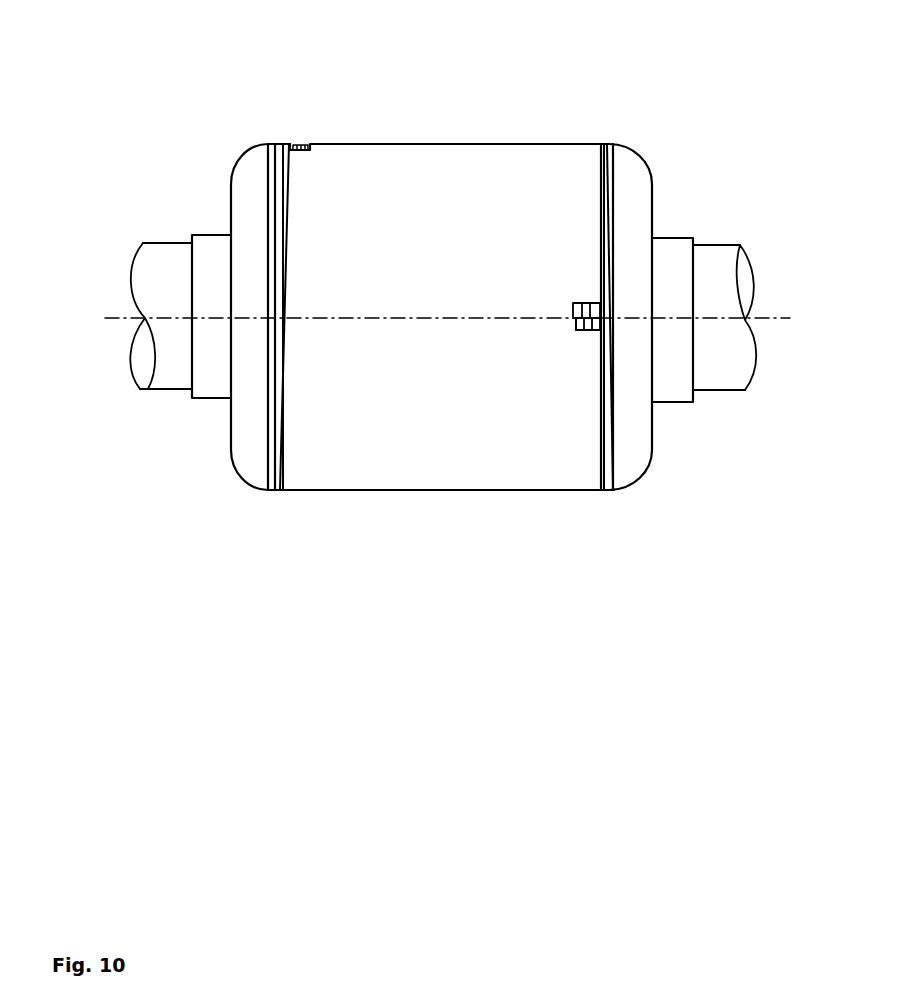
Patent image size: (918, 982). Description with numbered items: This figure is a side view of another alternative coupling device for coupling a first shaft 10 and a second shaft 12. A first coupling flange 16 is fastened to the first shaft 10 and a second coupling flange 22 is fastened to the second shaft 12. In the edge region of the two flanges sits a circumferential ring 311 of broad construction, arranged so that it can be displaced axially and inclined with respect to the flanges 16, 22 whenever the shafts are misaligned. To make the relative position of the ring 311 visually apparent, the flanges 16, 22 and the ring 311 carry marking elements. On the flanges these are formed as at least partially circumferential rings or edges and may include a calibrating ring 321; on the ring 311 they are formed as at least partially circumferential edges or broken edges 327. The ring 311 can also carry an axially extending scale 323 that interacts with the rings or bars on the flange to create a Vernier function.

The first shaft 10 is at (163, 268).
The second shaft 12 is at (712, 252).
The first coupling flange 16 is at (213, 270).
The second coupling flange 22 is at (637, 468).
The circumferential ring 311 is at (422, 146).
The calibrating ring 321 is at (272, 165).
The scale 323 is at (590, 331).
The broken edge 327 is at (576, 320).